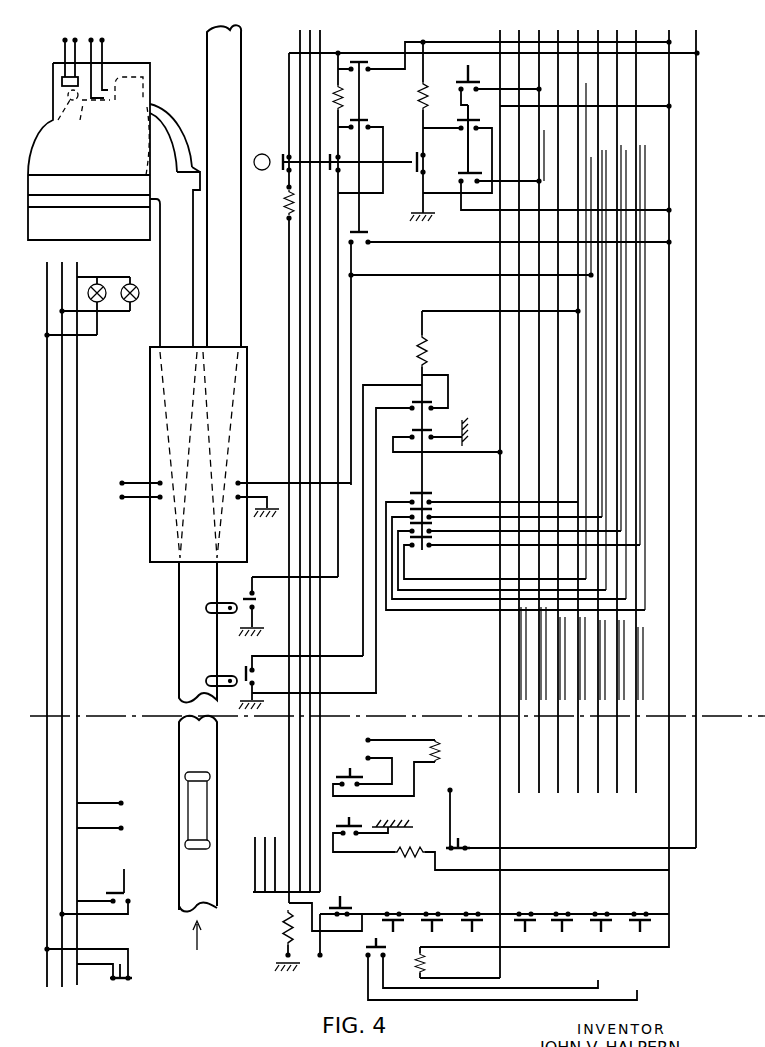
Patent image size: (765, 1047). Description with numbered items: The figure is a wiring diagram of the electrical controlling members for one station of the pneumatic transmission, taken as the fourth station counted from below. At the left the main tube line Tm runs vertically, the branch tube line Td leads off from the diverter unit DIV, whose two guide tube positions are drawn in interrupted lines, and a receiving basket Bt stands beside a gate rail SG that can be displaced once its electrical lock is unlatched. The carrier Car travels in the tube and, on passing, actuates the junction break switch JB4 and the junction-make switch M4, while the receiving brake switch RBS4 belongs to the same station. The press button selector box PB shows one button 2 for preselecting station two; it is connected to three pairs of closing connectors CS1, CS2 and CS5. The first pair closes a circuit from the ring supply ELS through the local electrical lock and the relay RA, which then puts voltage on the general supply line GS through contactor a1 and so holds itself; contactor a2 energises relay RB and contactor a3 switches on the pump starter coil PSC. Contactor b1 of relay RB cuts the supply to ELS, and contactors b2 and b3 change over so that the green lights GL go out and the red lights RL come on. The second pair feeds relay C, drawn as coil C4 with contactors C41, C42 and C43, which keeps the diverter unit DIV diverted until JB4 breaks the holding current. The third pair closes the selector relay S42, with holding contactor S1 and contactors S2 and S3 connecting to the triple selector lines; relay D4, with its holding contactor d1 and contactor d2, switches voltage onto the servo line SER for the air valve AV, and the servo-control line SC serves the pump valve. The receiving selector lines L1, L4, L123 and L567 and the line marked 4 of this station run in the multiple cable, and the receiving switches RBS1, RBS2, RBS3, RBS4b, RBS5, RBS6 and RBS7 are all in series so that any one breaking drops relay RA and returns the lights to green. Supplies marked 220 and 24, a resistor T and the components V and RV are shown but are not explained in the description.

The receiving brake switch RBS4 is at (59, 51).
The receiving selector line L4 is at (178, 119).
The main tube line Tm is at (236, 66).
The gate rail SG is at (163, 106).
The receiving basket Bt is at (89, 151).
The green light GL is at (75, 300).
The red light RL is at (106, 292).
The branch tube line Td is at (160, 330).
The diverter unit DIV is at (152, 431).
The 220 V AC supply 220 is at (244, 610).
The carrier car Car is at (203, 811).
The 24 V AC supply 24 is at (110, 815).
The contactor b2 is at (100, 893).
The contactor b3 is at (96, 966).
The receiving selector lines L567 is at (310, 450).
The triple line 4 is at (489, 470).
The press button selector box PB is at (332, 152).
The selector button for station No. 2 is at (262, 162).
The closing connectors cs1 CS1 is at (283, 152).
The closing connectors cs2 CS2 is at (341, 161).
The closing connectors cs3 CS5 is at (434, 163).
The resistor T is at (275, 202).
The contactor of relay C C43 is at (357, 60).
The relay C C4 is at (344, 100).
The contactor of relay C C41 is at (368, 154).
The holding contactor c4' C42 is at (509, 357).
The selector relay S4-2 S42 is at (412, 130).
The contactor s2 S2 is at (494, 85).
The holding contactor s' S1 is at (457, 149).
The contactor s3 S3 is at (565, 189).
The receiving selector line L1 is at (578, 494).
The general supply line GS is at (667, 664).
The electrical lock line ELS is at (696, 618).
The servo line SER is at (499, 689).
The relay D4 is at (499, 337).
The holding contactor d' d1 is at (425, 403).
The contactor d'' d2 is at (446, 434).
The junction break switch JB4 is at (288, 606).
The junction-make switch M4 is at (308, 682).
The pump starter coil PSC is at (416, 749).
The contactor a3 is at (381, 775).
The contactor a2 is at (368, 834).
The relay RB is at (532, 851).
The contactor b1 is at (571, 814).
The receiving selector lines L123 is at (281, 858).
The contactor a a1 is at (479, 934).
The relay RA is at (282, 940).
The switch V is at (376, 946).
The air valve AV is at (494, 971).
The servo-control line SC is at (505, 977).
The resistor RV is at (542, 962).
The receiving switch RBS1 is at (392, 913).
The receiving switch RBS2 is at (431, 913).
The receiving switch RBS3 is at (471, 913).
The receiving switch RBS4b is at (524, 913).
The receiving switch RBS5 is at (562, 913).
The receiving switch RBS6 is at (601, 913).
The receiving switch RBS7 is at (641, 913).